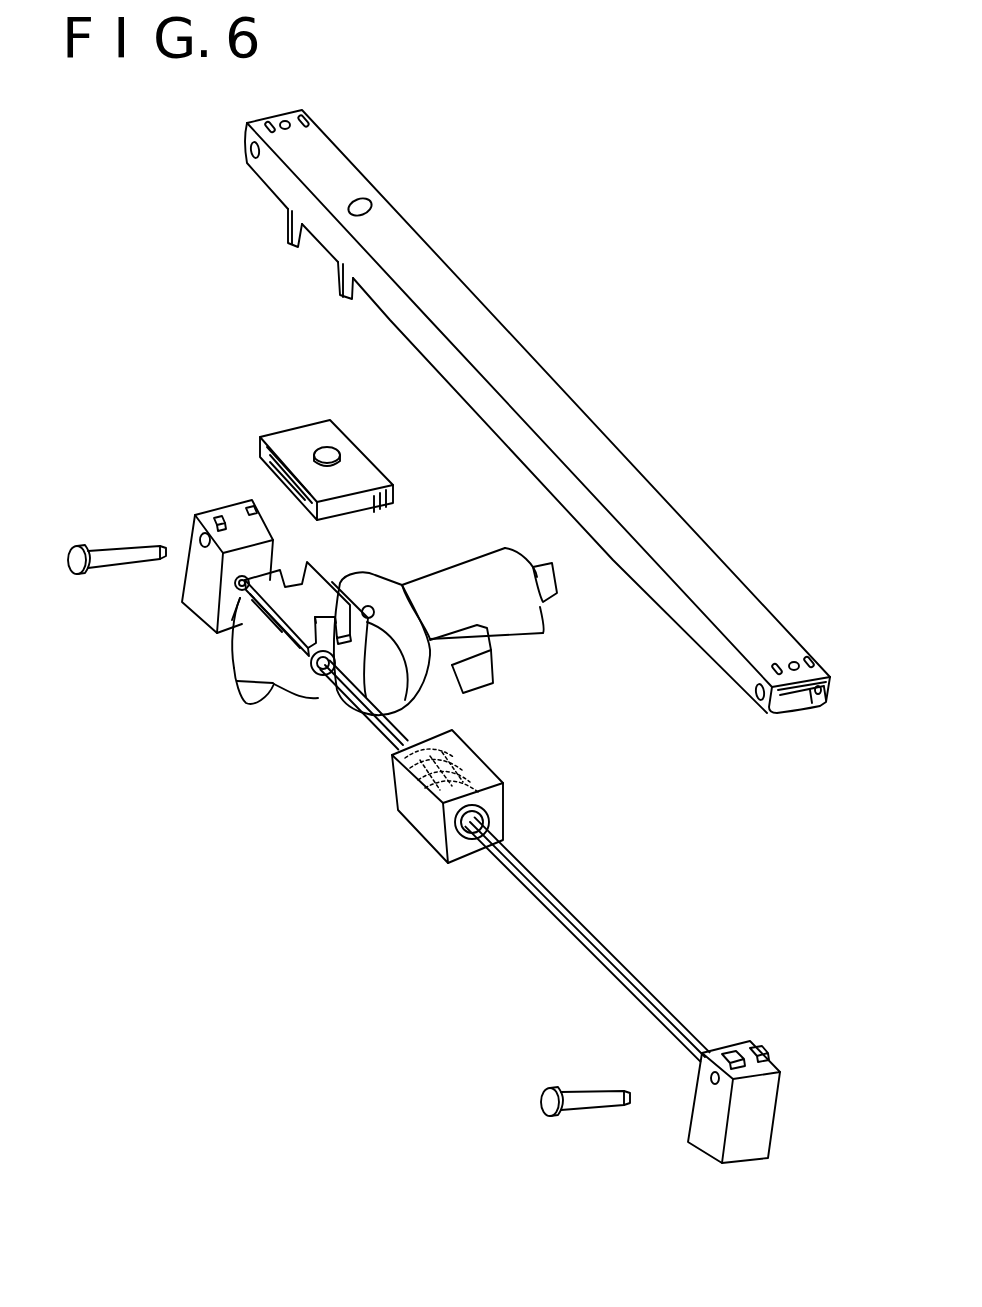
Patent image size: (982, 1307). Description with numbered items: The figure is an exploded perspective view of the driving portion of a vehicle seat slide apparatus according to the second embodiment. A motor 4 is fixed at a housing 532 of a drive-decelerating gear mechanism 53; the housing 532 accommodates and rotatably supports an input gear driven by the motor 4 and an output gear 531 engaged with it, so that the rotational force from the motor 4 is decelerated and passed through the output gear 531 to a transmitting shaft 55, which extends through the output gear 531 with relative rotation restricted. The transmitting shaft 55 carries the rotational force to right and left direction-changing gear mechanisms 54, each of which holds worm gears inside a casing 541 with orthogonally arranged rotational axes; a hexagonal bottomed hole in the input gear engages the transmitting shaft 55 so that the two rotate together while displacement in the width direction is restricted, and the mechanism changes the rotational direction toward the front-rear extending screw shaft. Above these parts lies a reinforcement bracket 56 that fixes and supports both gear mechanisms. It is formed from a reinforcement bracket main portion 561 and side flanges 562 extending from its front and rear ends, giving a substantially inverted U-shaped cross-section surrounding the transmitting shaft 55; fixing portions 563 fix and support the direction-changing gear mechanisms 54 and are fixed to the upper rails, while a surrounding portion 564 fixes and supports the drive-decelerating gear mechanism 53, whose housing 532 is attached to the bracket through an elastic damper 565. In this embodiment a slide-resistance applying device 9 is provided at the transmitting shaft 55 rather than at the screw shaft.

The motor 4 is at (528, 630).
The slide-resistance applying device 9 is at (488, 762).
The drive-decelerating gear mechanism 53 is at (243, 727).
The output gear 531 is at (312, 672).
The housing 532 is at (268, 683).
The direction-changing gear mechanism 54 is at (164, 620).
The casing 541 is at (188, 578).
The transmitting shaft 55 is at (583, 927).
The reinforcement bracket 56 is at (502, 442).
The reinforcement bracket main portion 561 is at (584, 437).
The side flanges 562 is at (813, 692).
The fixing portions 563 is at (234, 177).
The surrounding portion 564 is at (308, 268).
The damper 565 is at (344, 424).